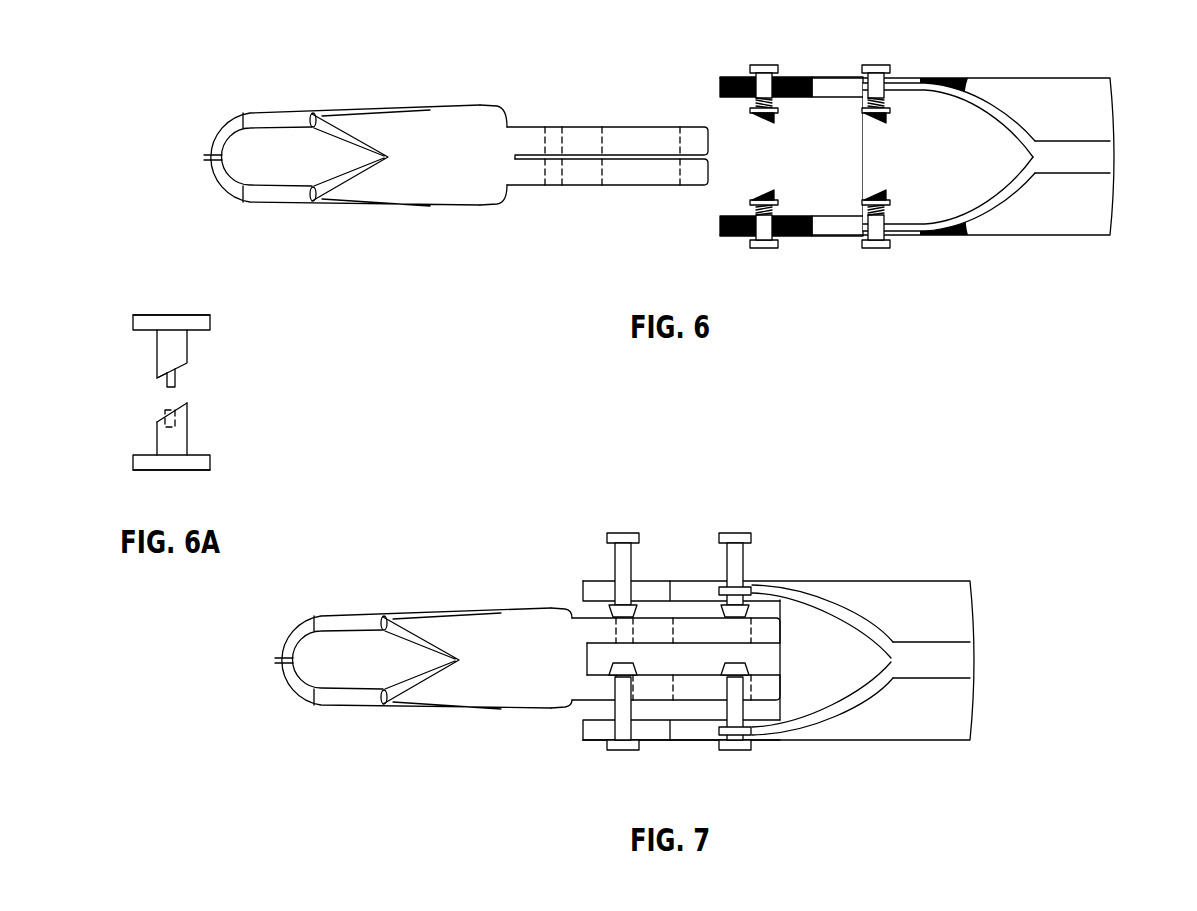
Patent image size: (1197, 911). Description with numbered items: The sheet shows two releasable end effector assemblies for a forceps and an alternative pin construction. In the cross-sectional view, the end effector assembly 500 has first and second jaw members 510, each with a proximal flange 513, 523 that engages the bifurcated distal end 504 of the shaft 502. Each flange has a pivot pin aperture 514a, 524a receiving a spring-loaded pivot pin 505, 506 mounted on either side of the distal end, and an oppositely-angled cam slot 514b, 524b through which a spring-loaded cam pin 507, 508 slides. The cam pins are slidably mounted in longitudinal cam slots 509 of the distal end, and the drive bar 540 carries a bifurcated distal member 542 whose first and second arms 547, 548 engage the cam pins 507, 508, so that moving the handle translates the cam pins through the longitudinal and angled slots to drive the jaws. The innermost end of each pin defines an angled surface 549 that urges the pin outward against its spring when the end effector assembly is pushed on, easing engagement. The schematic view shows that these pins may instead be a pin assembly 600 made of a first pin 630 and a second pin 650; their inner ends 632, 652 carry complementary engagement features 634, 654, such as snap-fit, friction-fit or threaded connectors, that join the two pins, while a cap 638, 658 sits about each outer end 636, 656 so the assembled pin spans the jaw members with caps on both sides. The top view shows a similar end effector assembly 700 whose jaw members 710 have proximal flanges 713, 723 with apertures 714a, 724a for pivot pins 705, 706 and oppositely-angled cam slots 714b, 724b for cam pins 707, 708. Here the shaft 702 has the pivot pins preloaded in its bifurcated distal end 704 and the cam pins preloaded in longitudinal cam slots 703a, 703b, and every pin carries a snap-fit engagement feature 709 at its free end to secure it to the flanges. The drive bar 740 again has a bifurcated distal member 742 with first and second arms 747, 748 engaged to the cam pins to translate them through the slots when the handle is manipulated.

In FIG. 6, the end effector assembly 500 is at (406, 72).
In FIG. 6, the shaft 502 is at (1062, 78).
In FIG. 6, the distal end 504 is at (962, 78).
In FIG. 6, the pivot pin 505 is at (764, 65).
In FIG. 6, the pivot pin 506 is at (764, 248).
In FIG. 6, the cam pin 507 is at (876, 65).
In FIG. 6, the cam pin 508 is at (876, 248).
In FIG. 6, the longitudinal cam slot 509 is at (825, 85).
In FIG. 6, the jaw member 510 is at (270, 92).
In FIG. 6, the proximal flange 513 is at (525, 125).
In FIG. 6, the pivot pin aperture 514a is at (555, 125).
In FIG. 6, the cam slot 514b is at (640, 140).
In FIG. 6, the proximal flange 523 is at (527, 187).
In FIG. 6, the pivot pin aperture 524a is at (555, 187).
In FIG. 6, the cam slot 524b is at (640, 170).
In FIG. 6, the drive bar 540 is at (1100, 157).
In FIG. 6, the bifurcated distal member 542 is at (1010, 205).
In FIG. 6, the first arm 547 is at (940, 80).
In FIG. 6, the second arm 548 is at (962, 237).
In FIG. 6, the angled surface 549 is at (770, 190).
In FIG. 6A, the pin assembly 600 is at (266, 361).
In FIG. 6A, the first pin 630 is at (186, 356).
In FIG. 6A, the inner end 632 is at (158, 378).
In FIG. 6A, the engagement feature 634 is at (178, 378).
In FIG. 6A, the outer end 636 is at (195, 330).
In FIG. 6A, the cap 638 is at (148, 315).
In FIG. 6A, the second pin 650 is at (190, 441).
In FIG. 6A, the inner end 652 is at (187, 405).
In FIG. 6A, the engagement feature 654 is at (168, 414).
In FIG. 6A, the outer end 656 is at (198, 458).
In FIG. 6A, the cap 658 is at (148, 470).
In FIG. 7, the end effector assembly 700 is at (444, 575).
In FIG. 7, the shaft 702 is at (912, 580).
In FIG. 7, the longitudinal cam slot 703a is at (713, 587).
In FIG. 7, the longitudinal cam slot 703b is at (700, 736).
In FIG. 7, the distal end 704 is at (775, 741).
In FIG. 7, the pivot pin 705 is at (622, 533).
In FIG. 7, the pivot pin 706 is at (622, 750).
In FIG. 7, the cam pin 707 is at (735, 533).
In FIG. 7, the cam pin 708 is at (740, 750).
In FIG. 7, the snap-fit engagement feature 709 is at (638, 590).
In FIG. 7, the jaw member 710 is at (437, 696).
In FIG. 7, the proximal flange 713 is at (585, 614).
In FIG. 7, the aperture 714a is at (623, 630).
In FIG. 7, the cam slot 714b is at (705, 630).
In FIG. 7, the proximal flange 723 is at (585, 702).
In FIG. 7, the aperture 724a is at (613, 690).
In FIG. 7, the cam slot 724b is at (690, 697).
In FIG. 7, the drive bar 740 is at (958, 662).
In FIG. 7, the bifurcated distal member 742 is at (893, 640).
In FIG. 7, the first arm 747 is at (830, 598).
In FIG. 7, the second arm 748 is at (875, 720).